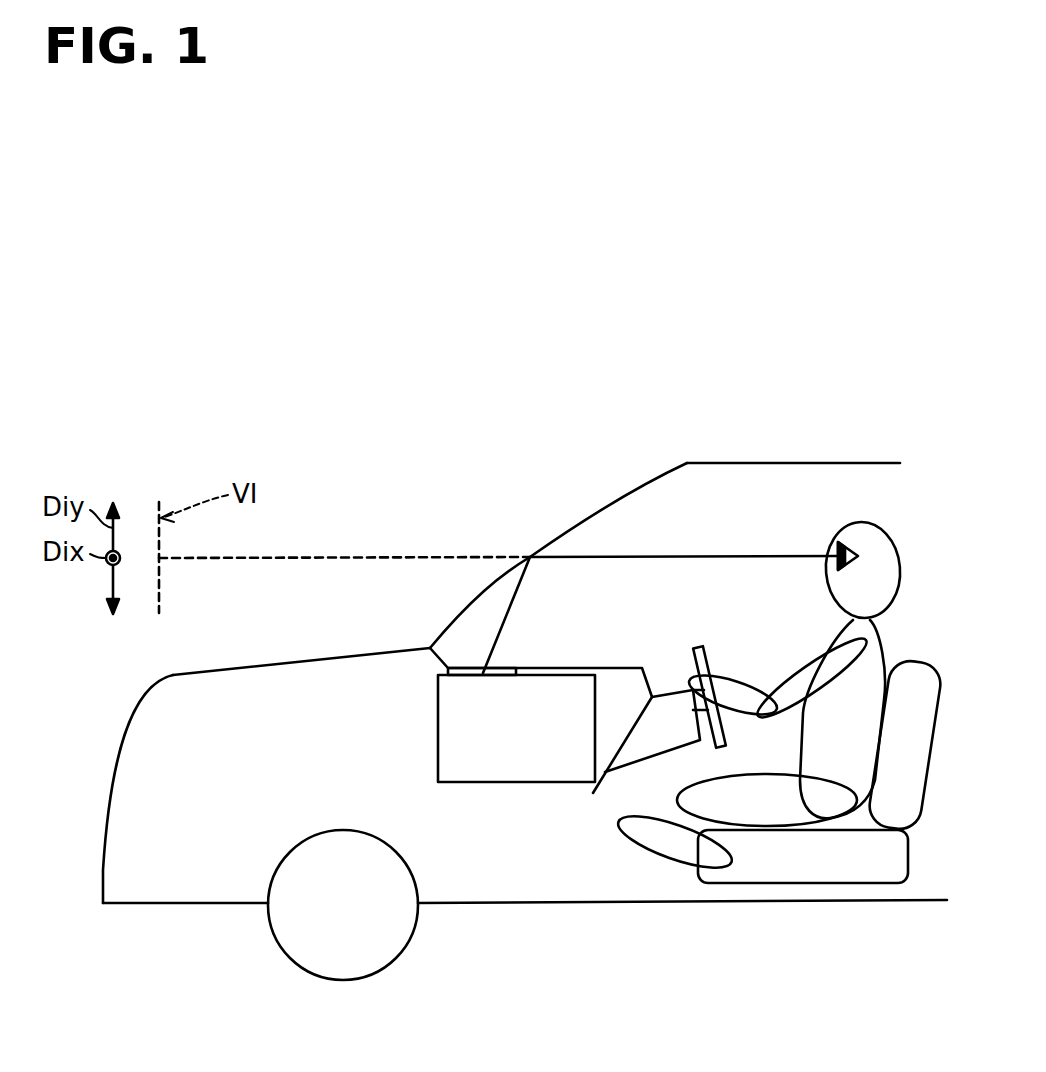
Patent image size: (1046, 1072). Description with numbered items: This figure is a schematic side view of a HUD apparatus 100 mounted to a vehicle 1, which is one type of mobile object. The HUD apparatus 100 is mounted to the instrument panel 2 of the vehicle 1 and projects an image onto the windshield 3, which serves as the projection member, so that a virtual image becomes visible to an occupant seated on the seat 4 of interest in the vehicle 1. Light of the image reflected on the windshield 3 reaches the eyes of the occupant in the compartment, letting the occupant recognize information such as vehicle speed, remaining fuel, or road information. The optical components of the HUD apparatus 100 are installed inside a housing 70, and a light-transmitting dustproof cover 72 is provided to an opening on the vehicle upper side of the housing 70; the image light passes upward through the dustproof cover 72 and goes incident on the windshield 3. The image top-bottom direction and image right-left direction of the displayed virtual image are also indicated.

The vehicle 1 is at (874, 463).
The instrument panel 2 is at (612, 668).
The windshield 3 is at (467, 612).
The seat 4 is at (908, 862).
The housing 70 is at (438, 722).
The dustproof cover 72 is at (507, 667).
The HUD apparatus 100 is at (463, 790).